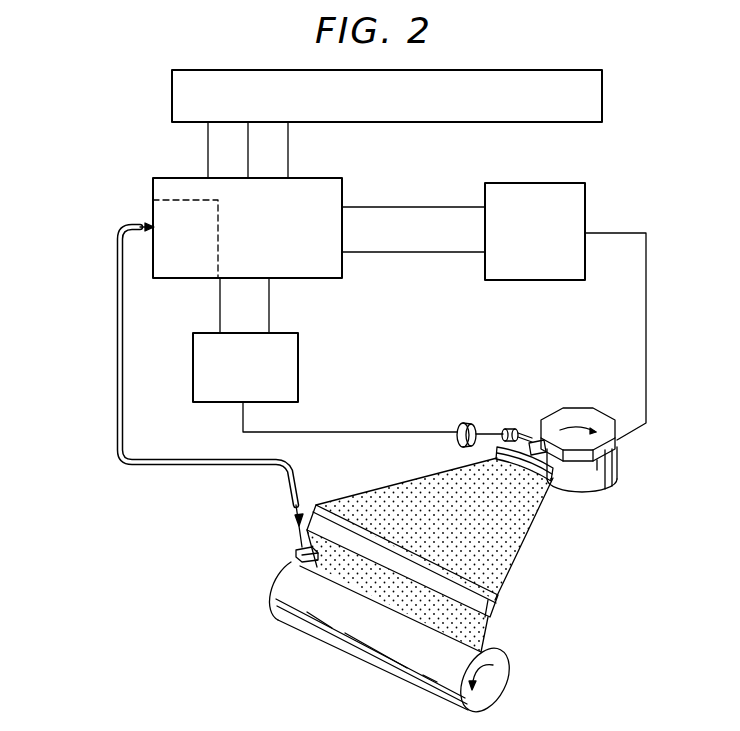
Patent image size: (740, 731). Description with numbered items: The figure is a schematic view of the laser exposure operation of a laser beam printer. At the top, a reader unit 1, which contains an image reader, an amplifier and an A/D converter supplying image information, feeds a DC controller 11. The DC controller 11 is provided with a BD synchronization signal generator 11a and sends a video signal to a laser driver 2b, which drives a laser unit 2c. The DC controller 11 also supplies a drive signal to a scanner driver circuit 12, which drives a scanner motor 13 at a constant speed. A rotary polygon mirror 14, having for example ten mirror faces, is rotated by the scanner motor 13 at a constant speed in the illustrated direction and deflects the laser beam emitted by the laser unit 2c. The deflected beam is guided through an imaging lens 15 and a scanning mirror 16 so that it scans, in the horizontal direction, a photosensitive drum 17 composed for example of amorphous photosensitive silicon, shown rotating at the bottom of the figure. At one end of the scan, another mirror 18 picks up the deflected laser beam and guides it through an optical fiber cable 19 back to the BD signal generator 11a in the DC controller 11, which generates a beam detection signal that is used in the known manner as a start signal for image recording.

The reader unit 1 is at (603, 99).
The DC controller 11 is at (303, 178).
The BD synchronization signal generator 11a is at (153, 208).
The scanner driver circuit 12 is at (550, 183).
The laser driver 2b is at (299, 366).
The laser unit 2c is at (467, 423).
The scanner motor 13 is at (600, 490).
The rotary polygon mirror 14 is at (586, 405).
The imaging lens 15 is at (540, 482).
The scanning mirror 16 is at (499, 600).
The photosensitive drum 17 is at (273, 583).
The mirror 18 is at (300, 548).
The optical fiber cable 19 is at (117, 371).